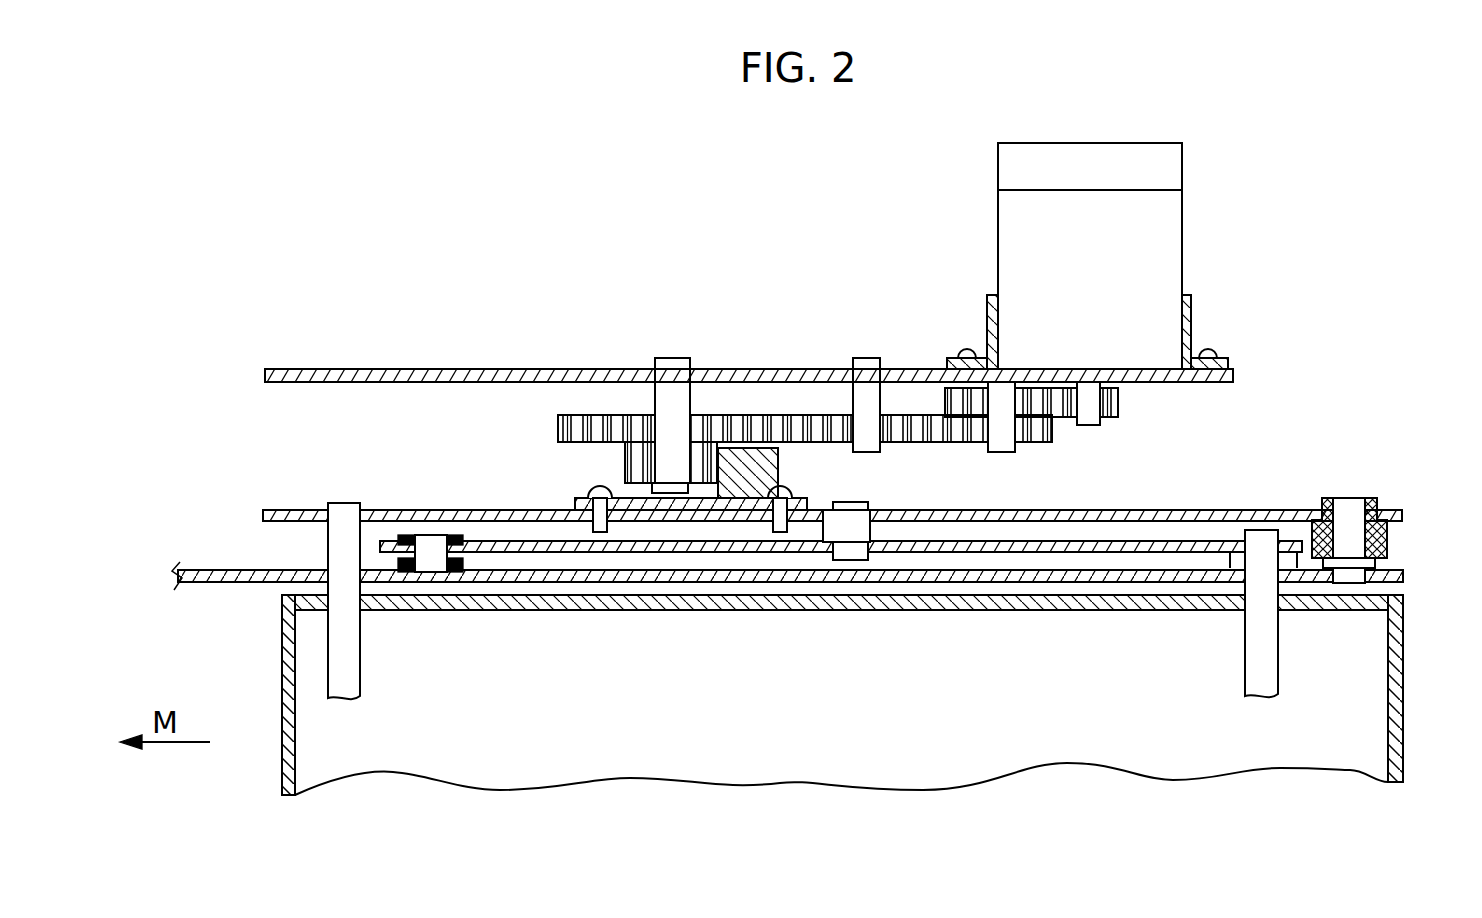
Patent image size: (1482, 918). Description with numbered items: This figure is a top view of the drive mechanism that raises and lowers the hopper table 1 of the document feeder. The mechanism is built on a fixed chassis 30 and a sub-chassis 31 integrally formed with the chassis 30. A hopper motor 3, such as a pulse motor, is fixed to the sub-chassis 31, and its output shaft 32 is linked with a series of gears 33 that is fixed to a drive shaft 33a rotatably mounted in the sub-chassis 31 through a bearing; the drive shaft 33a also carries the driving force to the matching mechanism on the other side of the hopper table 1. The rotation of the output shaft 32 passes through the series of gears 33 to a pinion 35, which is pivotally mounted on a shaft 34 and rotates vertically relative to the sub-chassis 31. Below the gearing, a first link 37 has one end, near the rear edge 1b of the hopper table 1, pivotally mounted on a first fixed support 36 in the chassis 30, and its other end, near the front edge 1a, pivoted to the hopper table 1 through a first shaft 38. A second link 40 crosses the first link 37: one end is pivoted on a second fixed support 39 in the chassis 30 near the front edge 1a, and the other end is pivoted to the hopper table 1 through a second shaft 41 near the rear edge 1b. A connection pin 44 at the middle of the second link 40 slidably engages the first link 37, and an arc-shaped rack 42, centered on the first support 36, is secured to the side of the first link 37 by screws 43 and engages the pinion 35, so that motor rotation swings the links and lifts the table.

The hopper table 1 is at (838, 760).
The front edge 1a is at (282, 768).
The rear edge 1b is at (1403, 725).
The hopper motor 3 is at (1112, 156).
The chassis 30 is at (215, 583).
The sub-chassis 31 is at (375, 370).
The output shaft 32 is at (1088, 425).
The series of gears 33 is at (831, 397).
The drive shaft 33a is at (866, 369).
The shaft 34 is at (675, 382).
The pinion 35 is at (655, 452).
The first fixed support 36 is at (1350, 508).
The first link 37 is at (1150, 510).
The first shaft 38 is at (343, 505).
The second fixed support 39 is at (430, 540).
The second link 40 is at (983, 548).
The second shaft 41 is at (1258, 700).
The arc-shaped rack 42 is at (775, 470).
The screws 43 is at (600, 487).
The connection pin 44 is at (878, 530).